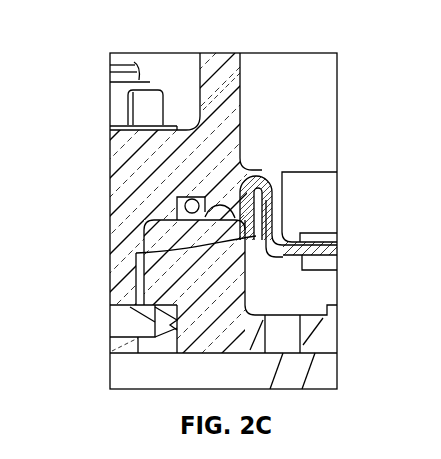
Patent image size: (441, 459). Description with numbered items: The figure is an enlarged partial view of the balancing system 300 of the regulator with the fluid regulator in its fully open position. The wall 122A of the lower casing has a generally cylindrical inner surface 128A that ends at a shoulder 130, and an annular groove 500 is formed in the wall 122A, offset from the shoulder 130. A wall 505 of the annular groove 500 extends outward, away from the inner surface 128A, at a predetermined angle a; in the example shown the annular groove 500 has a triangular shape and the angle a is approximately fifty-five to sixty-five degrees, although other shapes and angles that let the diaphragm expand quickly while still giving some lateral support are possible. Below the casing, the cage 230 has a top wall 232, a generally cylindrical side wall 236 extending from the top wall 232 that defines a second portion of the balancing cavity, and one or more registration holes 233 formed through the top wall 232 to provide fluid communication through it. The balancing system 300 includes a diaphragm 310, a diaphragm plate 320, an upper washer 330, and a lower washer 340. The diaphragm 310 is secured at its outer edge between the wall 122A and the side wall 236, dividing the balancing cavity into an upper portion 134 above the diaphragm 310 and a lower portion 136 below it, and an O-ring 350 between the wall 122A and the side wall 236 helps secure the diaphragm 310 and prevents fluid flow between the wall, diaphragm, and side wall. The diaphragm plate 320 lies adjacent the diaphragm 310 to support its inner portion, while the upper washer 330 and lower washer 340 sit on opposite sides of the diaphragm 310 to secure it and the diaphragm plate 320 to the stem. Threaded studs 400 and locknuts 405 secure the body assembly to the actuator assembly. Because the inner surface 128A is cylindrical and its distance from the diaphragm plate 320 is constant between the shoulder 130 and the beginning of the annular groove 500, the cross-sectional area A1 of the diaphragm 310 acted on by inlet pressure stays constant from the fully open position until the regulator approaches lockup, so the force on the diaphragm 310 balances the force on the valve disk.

The wall 122A is at (217, 62).
The inner surface 128A is at (238, 148).
The shoulder 130 is at (111, 175).
The upper portion 134 is at (313, 142).
The lower portion 136 is at (318, 309).
The cage 230 is at (208, 358).
The top wall 232 is at (323, 340).
The registration holes 233 is at (278, 338).
The side wall 236 is at (230, 283).
The balancing system 300 is at (378, 174).
The diaphragm 310 is at (283, 257).
The diaphragm plate 320 is at (283, 206).
The upper washer 330 is at (330, 236).
The lower washer 340 is at (335, 262).
The O-ring 350 is at (177, 200).
The threaded studs 400 is at (135, 67).
The locknuts 405 is at (148, 112).
The annular groove 500 is at (243, 160).
The wall of annular groove 505 is at (111, 148).
The cross-sectional area A1 is at (136, 253).
The angle α a is at (267, 172).